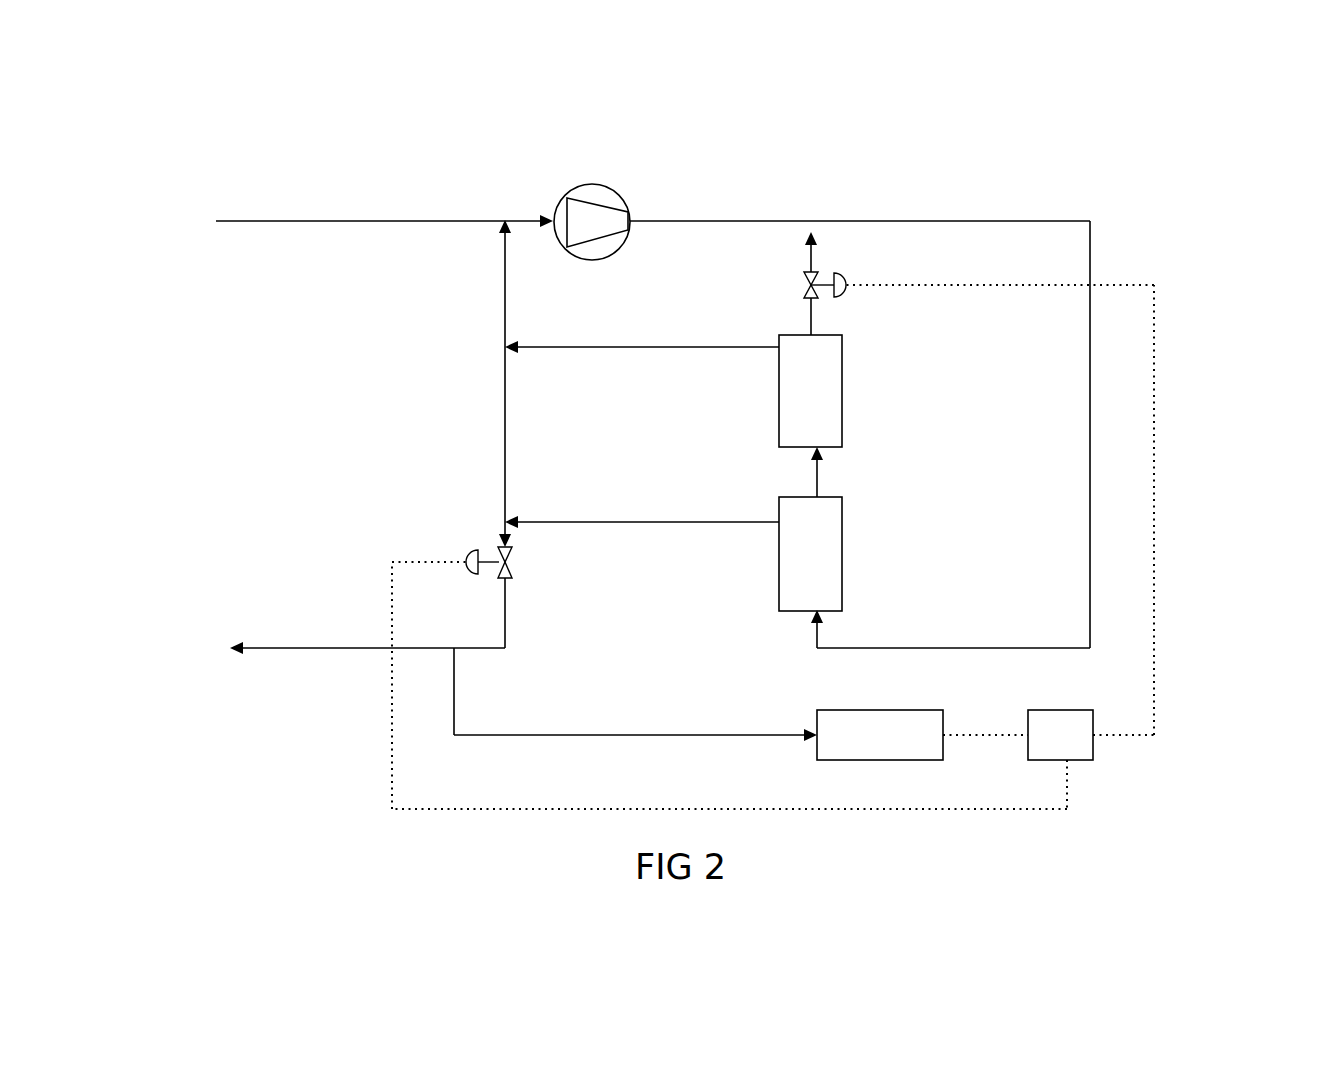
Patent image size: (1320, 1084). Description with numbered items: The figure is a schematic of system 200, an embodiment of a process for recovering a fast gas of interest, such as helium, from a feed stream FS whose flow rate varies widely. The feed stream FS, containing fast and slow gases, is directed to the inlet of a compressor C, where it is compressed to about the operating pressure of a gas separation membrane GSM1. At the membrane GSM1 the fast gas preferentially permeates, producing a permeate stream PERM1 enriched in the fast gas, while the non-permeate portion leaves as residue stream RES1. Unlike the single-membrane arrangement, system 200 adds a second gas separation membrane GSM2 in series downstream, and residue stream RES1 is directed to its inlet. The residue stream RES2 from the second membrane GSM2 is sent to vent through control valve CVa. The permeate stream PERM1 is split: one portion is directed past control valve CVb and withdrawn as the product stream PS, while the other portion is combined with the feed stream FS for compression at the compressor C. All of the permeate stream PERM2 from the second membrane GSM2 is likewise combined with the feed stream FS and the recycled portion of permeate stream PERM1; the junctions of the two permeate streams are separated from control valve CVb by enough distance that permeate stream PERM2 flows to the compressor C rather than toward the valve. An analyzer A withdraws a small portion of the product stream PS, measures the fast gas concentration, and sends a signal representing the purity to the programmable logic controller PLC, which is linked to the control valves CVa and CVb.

The system 200 is at (1200, 852).
The feed stream FS is at (265, 221).
The compressor C is at (590, 210).
The control valve CVa is at (843, 283).
The control valve CVb is at (482, 545).
The second gas separation membrane GSM2 is at (820, 395).
The gas separation membrane GSM1 is at (820, 572).
The residue stream RES2 is at (805, 258).
The residue stream RES1 is at (820, 470).
The permeate stream PERM2 is at (665, 347).
The permeate stream PERM1 is at (720, 522).
The analyzer A is at (868, 722).
The programmable logic controller PLC is at (1067, 735).
The product stream PS is at (354, 648).